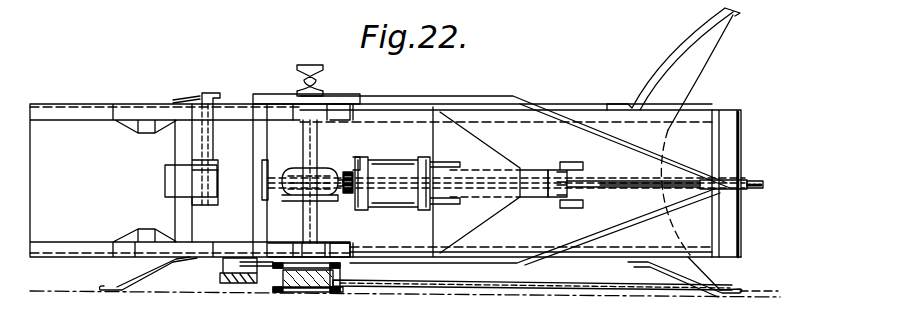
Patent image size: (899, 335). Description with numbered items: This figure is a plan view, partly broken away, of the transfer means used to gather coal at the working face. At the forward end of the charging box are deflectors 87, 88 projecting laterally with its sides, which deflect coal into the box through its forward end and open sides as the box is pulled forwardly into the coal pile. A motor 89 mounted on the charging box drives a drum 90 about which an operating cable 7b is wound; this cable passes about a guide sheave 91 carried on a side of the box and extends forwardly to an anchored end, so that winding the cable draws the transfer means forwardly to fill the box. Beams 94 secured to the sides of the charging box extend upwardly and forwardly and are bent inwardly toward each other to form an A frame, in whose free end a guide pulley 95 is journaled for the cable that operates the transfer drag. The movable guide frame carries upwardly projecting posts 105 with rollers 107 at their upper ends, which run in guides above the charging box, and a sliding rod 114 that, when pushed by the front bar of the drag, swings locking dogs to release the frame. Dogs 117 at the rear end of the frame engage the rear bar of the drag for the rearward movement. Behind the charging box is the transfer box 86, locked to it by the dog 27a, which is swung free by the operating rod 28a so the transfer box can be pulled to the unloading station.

The transfer box 86 is at (62, 96).
The operating rod 28a is at (205, 143).
The dog 27a is at (165, 185).
The dogs 117 is at (276, 104).
The motor 89 is at (391, 162).
The beams 94 is at (470, 90).
The posts 105 is at (568, 165).
The rollers 107 is at (580, 190).
The sliding rod 114 is at (642, 187).
The deflector 87 is at (700, 35).
The guide pulley 95 is at (757, 189).
The deflector 88 is at (721, 298).
The guide sheave 91 is at (248, 284).
The drum 90 is at (318, 288).
The operating cable 7b is at (407, 290).